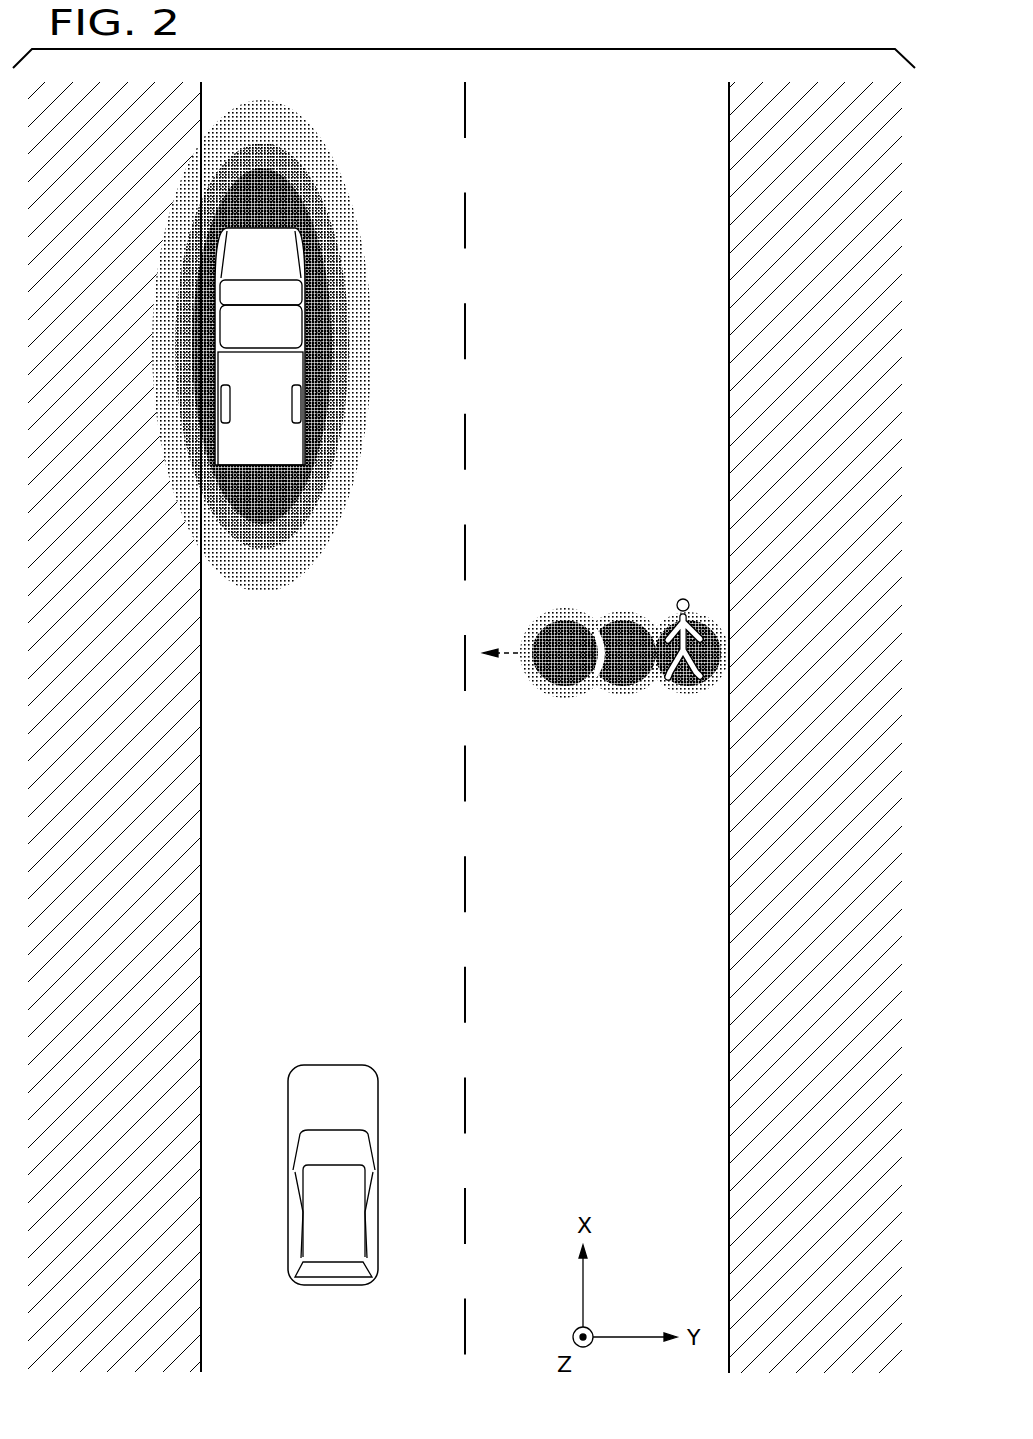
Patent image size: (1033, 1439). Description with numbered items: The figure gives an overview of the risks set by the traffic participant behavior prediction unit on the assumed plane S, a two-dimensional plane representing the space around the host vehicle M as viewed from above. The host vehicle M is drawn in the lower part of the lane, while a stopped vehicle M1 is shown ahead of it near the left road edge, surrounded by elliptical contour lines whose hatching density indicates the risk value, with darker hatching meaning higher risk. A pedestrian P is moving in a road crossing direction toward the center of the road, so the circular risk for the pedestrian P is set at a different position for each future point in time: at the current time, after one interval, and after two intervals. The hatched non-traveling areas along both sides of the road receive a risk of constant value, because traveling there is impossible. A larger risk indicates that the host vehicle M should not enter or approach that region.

The stopped vehicle M1 is at (313, 430).
The assumed plane S is at (605, 308).
The pedestrian P is at (681, 597).
The host vehicle M is at (378, 1174).